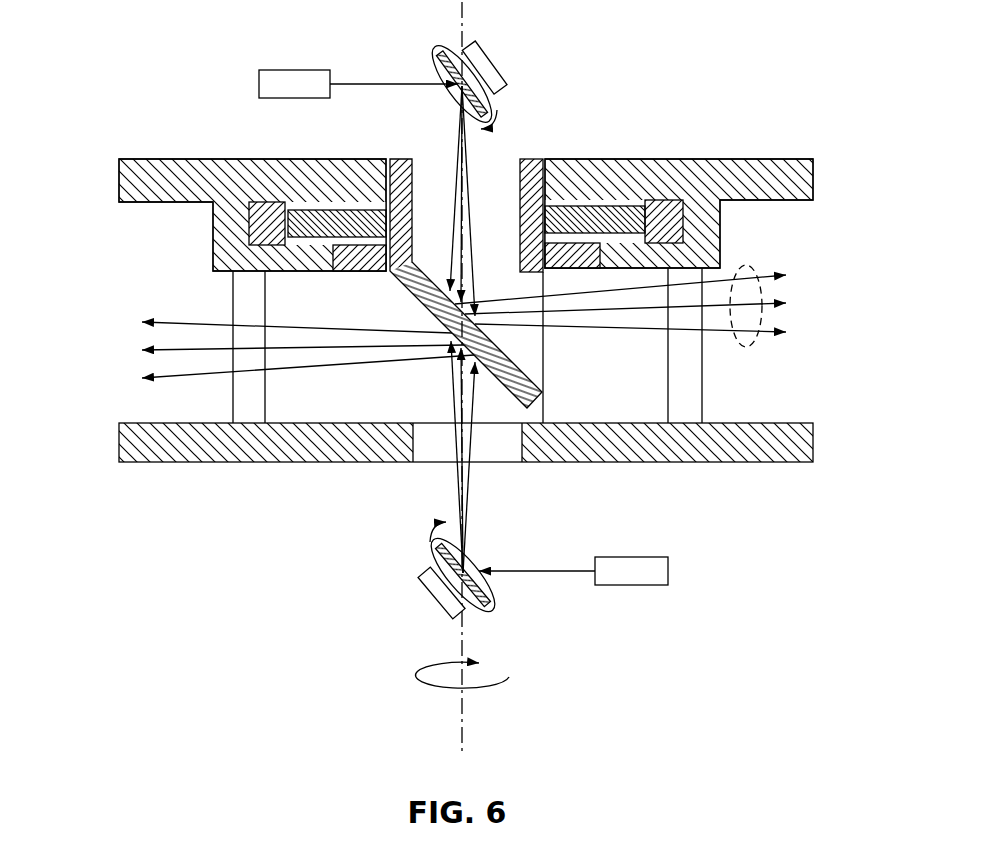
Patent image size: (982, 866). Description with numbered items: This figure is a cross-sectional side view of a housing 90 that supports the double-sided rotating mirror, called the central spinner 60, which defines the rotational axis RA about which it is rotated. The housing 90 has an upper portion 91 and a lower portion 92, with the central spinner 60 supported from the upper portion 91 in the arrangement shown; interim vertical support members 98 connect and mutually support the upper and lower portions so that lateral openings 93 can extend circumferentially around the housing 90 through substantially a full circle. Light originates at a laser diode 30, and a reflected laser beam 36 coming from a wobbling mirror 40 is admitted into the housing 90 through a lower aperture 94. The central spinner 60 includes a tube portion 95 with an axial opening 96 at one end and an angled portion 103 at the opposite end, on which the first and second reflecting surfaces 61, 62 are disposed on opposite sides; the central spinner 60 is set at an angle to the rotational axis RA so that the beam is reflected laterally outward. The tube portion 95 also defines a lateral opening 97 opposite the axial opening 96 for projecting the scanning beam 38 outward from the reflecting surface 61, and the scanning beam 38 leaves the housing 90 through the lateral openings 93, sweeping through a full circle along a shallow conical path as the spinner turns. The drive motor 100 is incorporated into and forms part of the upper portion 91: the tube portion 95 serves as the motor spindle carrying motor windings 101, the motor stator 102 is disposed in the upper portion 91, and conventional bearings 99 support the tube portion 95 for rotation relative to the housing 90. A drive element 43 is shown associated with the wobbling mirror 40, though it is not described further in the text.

The laser diode 30 is at (259, 82).
The second reflected laser beam 36 is at (474, 484).
The scanning beam 38 is at (752, 340).
The wobbling mirror 40 is at (464, 321).
The mirror drive 43 is at (506, 42).
The central spinner 60 is at (481, 265).
The first reflecting surface 61 is at (524, 364).
The second reflecting surface 62 is at (391, 277).
The housing 90 is at (454, 316).
The upper portion 91 is at (246, 196).
The lower portion 92 is at (466, 473).
The lateral openings 93 is at (230, 393).
The lower aperture 94 is at (414, 447).
The tube portion 95 is at (398, 172).
The axial opening 96 is at (442, 175).
The lateral opening 97 is at (549, 340).
The vertical support members 98 is at (678, 385).
The bearings 99 is at (347, 253).
The drive motor 100 is at (230, 230).
The motor windings 101 is at (603, 212).
The motor stator 102 is at (675, 203).
The angled portion 103 is at (417, 298).
The rotational axis RA is at (463, 728).